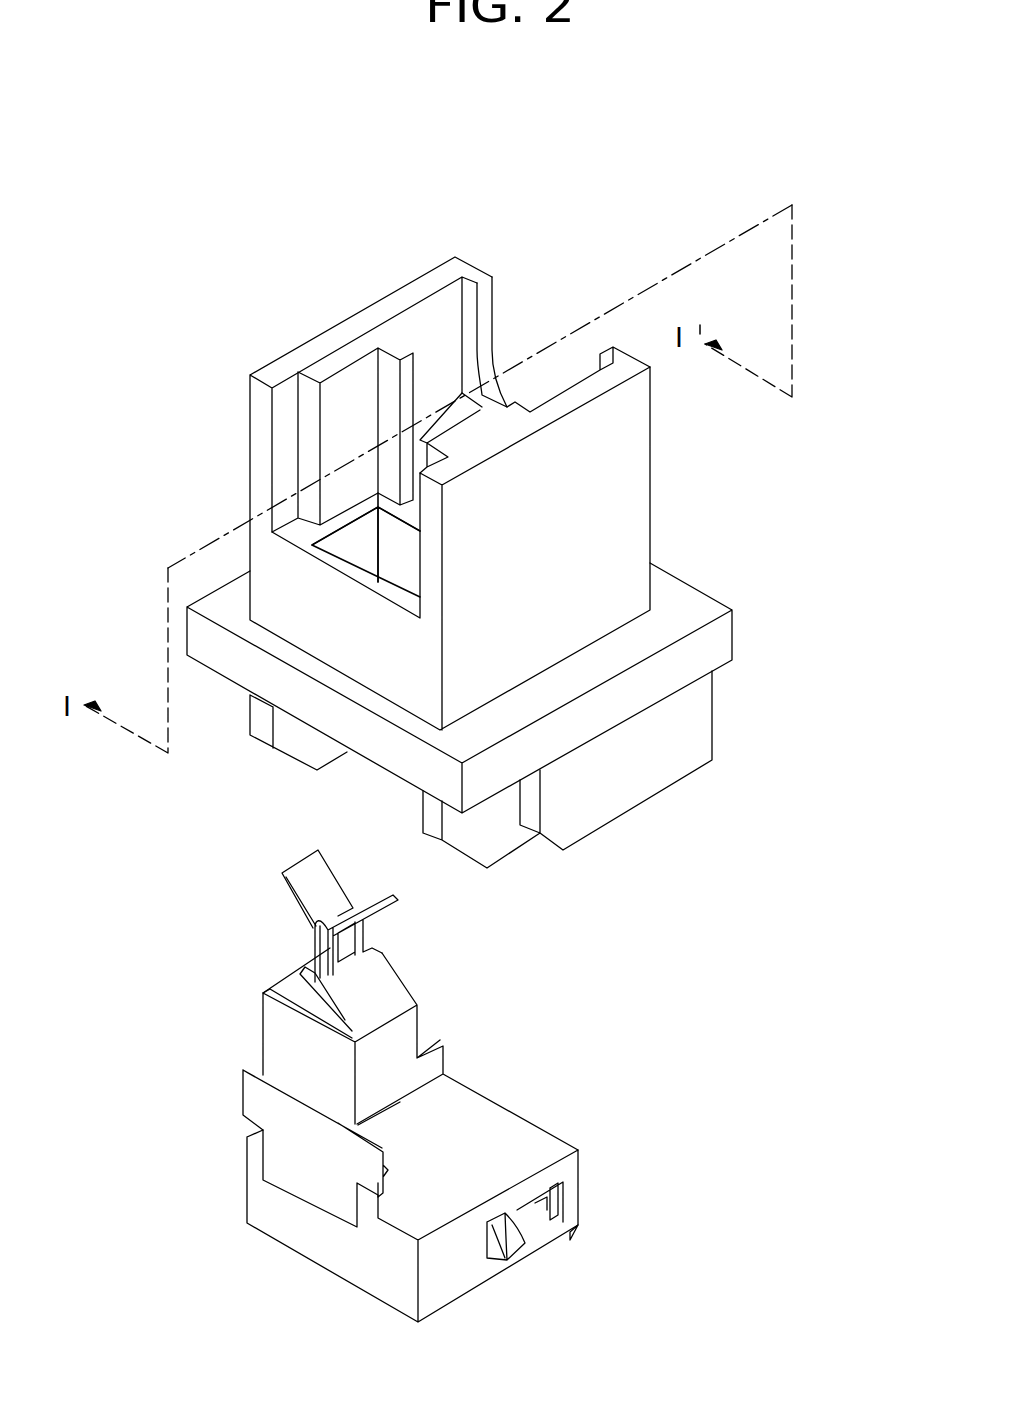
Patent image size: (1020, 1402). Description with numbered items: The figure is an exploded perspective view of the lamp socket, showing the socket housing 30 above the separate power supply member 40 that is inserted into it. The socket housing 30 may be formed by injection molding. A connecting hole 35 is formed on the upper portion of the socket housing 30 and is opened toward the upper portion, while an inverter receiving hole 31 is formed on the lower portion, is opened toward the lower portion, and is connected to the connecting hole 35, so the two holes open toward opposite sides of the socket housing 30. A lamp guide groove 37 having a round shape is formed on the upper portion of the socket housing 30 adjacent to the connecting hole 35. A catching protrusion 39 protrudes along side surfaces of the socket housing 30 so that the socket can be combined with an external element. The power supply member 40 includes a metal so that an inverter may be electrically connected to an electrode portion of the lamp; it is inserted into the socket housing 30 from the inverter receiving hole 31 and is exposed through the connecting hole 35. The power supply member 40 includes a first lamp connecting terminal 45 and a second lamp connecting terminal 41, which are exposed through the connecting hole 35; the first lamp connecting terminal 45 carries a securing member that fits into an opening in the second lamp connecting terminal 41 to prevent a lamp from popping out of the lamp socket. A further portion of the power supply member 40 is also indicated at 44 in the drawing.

The socket housing 30 is at (648, 505).
The inverter receiving hole 31 is at (360, 765).
The connecting hole 35 is at (371, 526).
The lamp guide groove 37 is at (488, 363).
The catching protrusion 39 is at (610, 710).
The power supply member 40 is at (428, 1029).
The second lamp connecting terminal 41 is at (313, 922).
The locking tab 44 is at (510, 1243).
The first lamp connecting terminal 45 is at (282, 872).